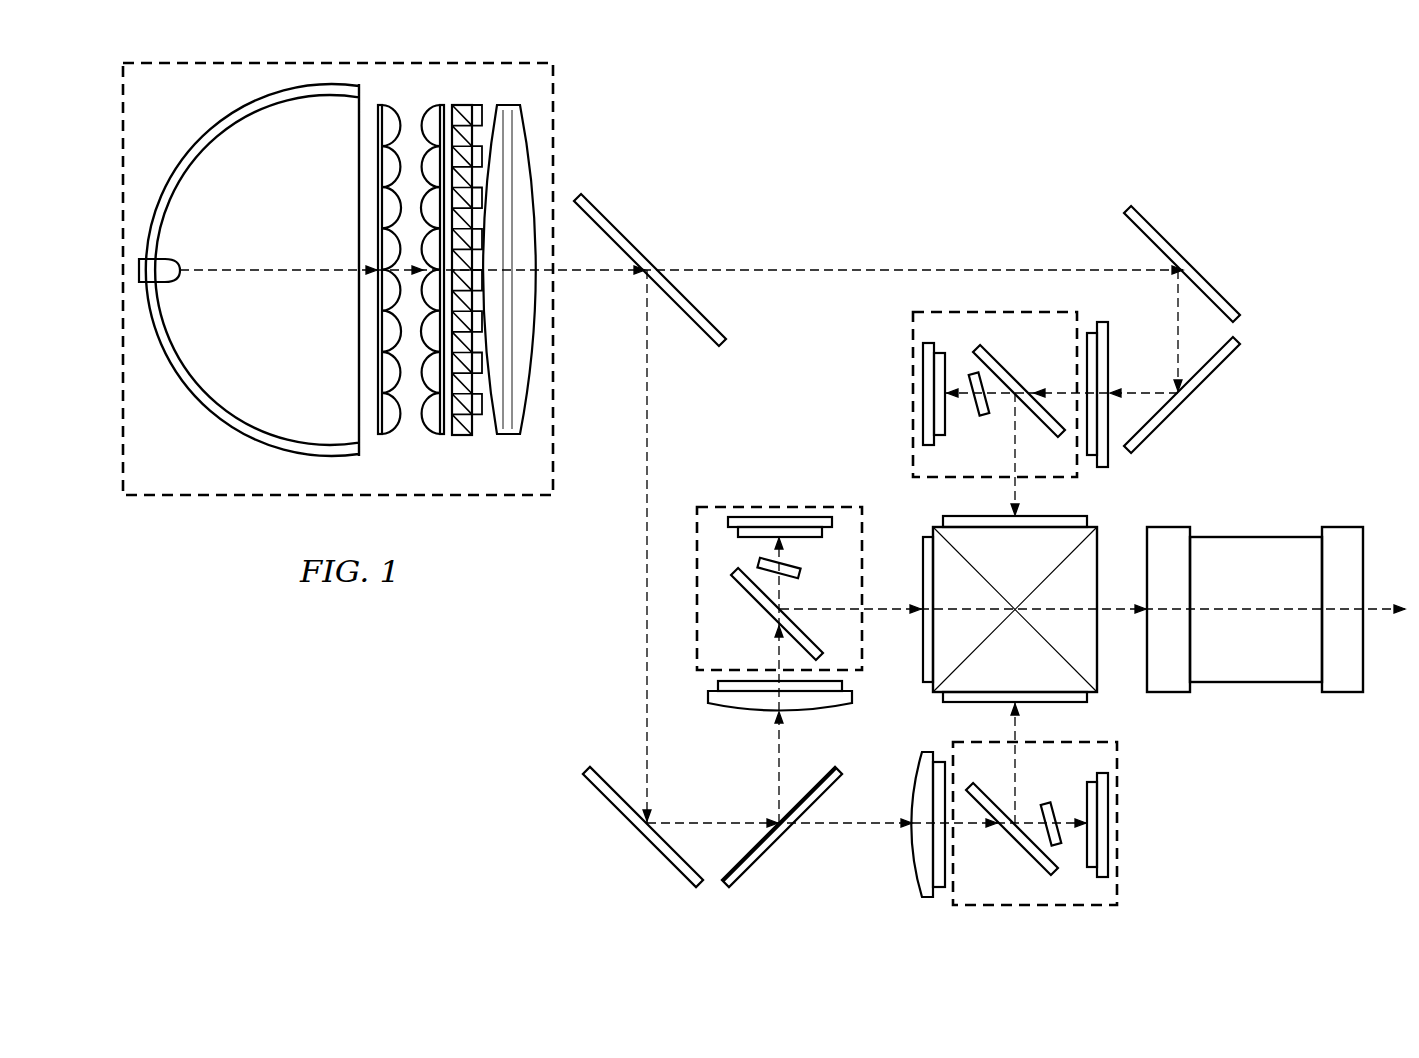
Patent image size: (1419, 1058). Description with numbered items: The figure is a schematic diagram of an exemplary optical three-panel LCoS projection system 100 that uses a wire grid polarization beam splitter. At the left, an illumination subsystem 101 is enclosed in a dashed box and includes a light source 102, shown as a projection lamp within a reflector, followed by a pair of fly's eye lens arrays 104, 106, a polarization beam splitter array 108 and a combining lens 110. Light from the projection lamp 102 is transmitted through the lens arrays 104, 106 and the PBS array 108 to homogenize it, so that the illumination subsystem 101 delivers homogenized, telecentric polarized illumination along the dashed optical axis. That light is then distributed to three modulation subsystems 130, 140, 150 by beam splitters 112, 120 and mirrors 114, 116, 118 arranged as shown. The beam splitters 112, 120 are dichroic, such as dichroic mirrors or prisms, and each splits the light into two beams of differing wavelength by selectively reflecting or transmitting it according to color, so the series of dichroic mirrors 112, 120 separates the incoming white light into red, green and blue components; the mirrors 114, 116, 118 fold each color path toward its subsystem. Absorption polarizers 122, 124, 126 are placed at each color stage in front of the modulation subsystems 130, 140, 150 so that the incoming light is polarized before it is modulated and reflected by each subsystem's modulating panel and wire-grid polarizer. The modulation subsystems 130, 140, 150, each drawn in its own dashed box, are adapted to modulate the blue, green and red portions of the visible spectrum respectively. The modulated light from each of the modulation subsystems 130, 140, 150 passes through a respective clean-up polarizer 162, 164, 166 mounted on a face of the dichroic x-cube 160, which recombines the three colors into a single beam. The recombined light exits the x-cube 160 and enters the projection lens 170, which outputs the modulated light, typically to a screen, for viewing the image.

The projection system 100 is at (1227, 163).
The illumination subsystem 101 is at (224, 497).
The light source 102 is at (216, 131).
The lens array 104 is at (385, 436).
The lens array 106 is at (440, 436).
The polarization beam splitter array 108 is at (462, 436).
The combining lens 110 is at (515, 436).
The beam splitter 112 is at (636, 247).
The mirror 114 is at (1200, 273).
The mirror 116 is at (1177, 412).
The mirror 118 is at (656, 856).
The beam splitter 120 is at (765, 857).
The absorption polarizer 122 is at (742, 712).
The absorption polarizer 124 is at (1110, 358).
The absorption polarizer 126 is at (912, 848).
The modulation subsystem 130 is at (911, 373).
The modulation subsystem 140 is at (760, 505).
The modulation subsystem 150 is at (1118, 845).
The dichroic x-cube 160 is at (1100, 540).
The clean-up polarizer 162 is at (942, 519).
The clean-up polarizer 164 is at (933, 686).
The clean-up polarizer 166 is at (1087, 697).
The projection lens 170 is at (1265, 536).